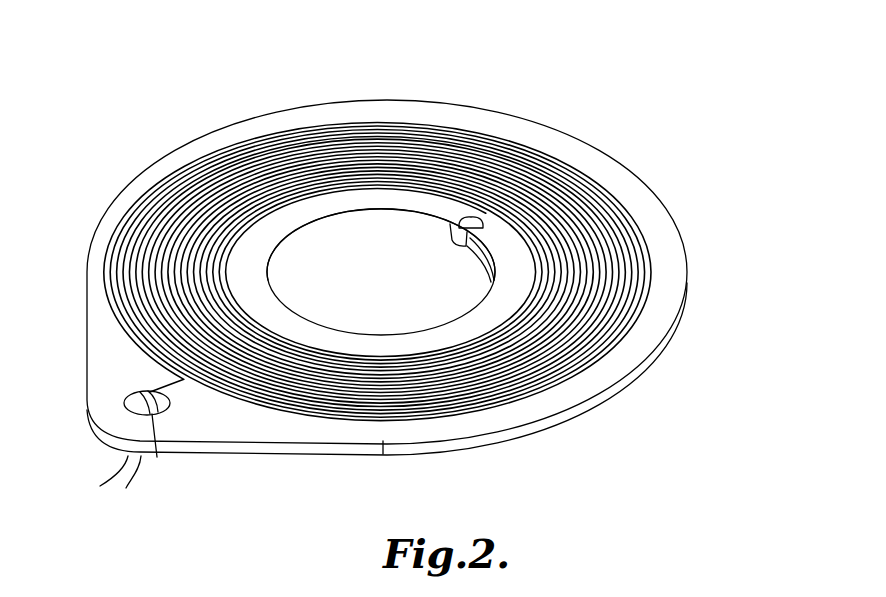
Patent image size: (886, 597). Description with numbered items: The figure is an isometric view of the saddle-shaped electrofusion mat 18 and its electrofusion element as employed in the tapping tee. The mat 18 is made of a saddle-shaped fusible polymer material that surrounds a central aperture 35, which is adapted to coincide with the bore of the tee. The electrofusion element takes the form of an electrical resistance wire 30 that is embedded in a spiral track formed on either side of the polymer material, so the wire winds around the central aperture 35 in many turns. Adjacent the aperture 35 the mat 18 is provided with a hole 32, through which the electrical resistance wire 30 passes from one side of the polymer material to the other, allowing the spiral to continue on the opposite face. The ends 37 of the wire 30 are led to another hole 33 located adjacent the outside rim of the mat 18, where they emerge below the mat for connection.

The saddle-shaped electrofusion mat 18 is at (613, 165).
The electrical resistance wire 30 is at (650, 298).
The hole 32 is at (471, 216).
The hole 33 is at (157, 457).
The central aperture 35 is at (314, 325).
The ends of the wire 37 is at (113, 470).